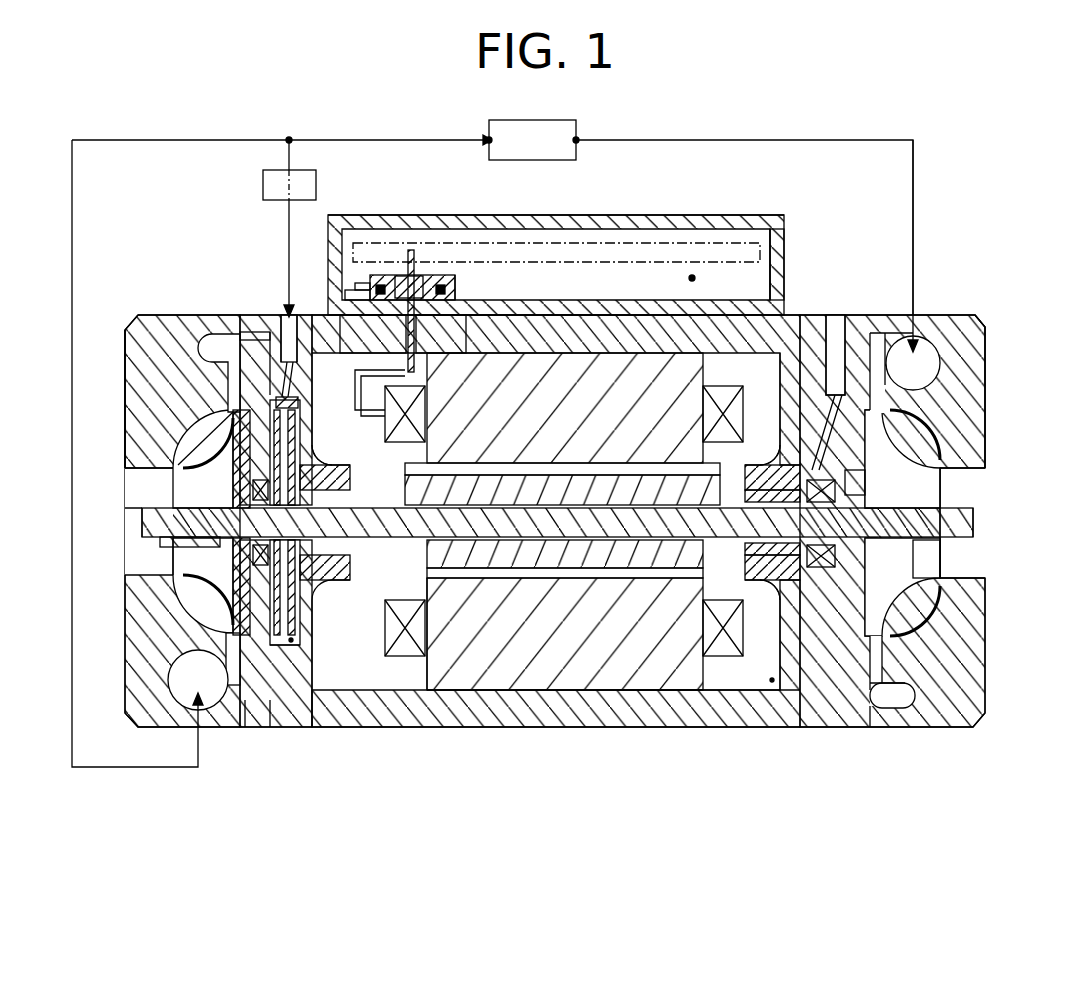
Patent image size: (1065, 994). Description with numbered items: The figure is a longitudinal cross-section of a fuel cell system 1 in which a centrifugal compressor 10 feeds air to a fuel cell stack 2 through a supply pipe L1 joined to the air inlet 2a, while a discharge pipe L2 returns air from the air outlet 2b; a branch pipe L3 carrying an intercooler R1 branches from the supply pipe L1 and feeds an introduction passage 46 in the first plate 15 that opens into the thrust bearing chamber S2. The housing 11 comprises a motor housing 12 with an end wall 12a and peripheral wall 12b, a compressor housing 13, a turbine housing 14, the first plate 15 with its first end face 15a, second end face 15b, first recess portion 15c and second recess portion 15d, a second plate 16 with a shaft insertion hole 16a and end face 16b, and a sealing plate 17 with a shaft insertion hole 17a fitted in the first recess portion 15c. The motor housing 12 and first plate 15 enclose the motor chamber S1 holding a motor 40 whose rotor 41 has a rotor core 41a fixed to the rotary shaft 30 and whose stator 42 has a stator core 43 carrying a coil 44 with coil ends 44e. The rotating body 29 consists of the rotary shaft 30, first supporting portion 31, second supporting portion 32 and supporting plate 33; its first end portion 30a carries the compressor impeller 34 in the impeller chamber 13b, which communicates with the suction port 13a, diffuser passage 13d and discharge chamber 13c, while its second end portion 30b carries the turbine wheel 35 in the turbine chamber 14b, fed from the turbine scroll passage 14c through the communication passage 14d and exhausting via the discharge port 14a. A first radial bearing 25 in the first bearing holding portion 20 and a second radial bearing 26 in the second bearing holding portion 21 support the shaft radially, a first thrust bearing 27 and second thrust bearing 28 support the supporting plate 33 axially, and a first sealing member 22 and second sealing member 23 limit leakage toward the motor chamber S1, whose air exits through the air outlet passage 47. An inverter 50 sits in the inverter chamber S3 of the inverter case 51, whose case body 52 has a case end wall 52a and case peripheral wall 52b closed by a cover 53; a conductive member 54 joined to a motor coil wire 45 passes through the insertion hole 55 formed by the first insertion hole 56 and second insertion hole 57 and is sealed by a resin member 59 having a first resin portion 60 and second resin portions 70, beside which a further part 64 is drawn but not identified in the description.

The fuel cell system 1 is at (941, 154).
The fuel cell stack 2 is at (533, 161).
The air inlet 2a is at (488, 144).
The air outlet 2b is at (577, 144).
The centrifugal compressor 10 is at (135, 253).
The housing 11 is at (188, 320).
The motor housing 12 is at (450, 727).
The end wall 12a is at (775, 610).
The peripheral wall 12b is at (672, 727).
The compressor housing 13 is at (153, 318).
The suction port 13a is at (130, 470).
The impeller chamber 13b is at (180, 488).
The discharge chamber 13c is at (196, 684).
The diffuser passage 13d is at (225, 650).
The turbine housing 14 is at (950, 320).
The discharge port 14a is at (985, 500).
The turbine chamber 14b is at (903, 486).
The turbine scroll passage 14c is at (915, 363).
The communication passage 14d is at (878, 660).
The first plate 15 is at (262, 318).
The first end face 15a is at (250, 727).
The second end face 15b is at (314, 727).
The first recess portion 15c is at (275, 727).
The second recess portion 15d is at (285, 648).
The second plate 16 is at (852, 320).
The shaft insertion hole 16a is at (850, 480).
The end face 16b is at (870, 727).
The sealing plate 17 is at (250, 330).
The shaft insertion hole 17a is at (173, 560).
The first bearing holding portion 20 is at (328, 460).
The second bearing holding portion 21 is at (775, 450).
The first sealing member 22 is at (236, 470).
The second sealing member 23 is at (870, 560).
The first radial bearing 25 is at (352, 570).
The second radial bearing 26 is at (745, 470).
The first thrust bearing 27 is at (266, 415).
The second thrust bearing 28 is at (299, 403).
The rotating body 29 is at (588, 545).
The rotary shaft 30 is at (622, 505).
The first end portion 30a is at (150, 522).
The second end portion 30b is at (973, 522).
The first supporting portion 31 is at (352, 480).
The second supporting portion 32 is at (800, 580).
The supporting plate 33 is at (280, 390).
The compressor impeller 34 is at (160, 542).
The turbine wheel 35 is at (920, 562).
The motor 40 is at (522, 692).
The rotor 41 is at (510, 478).
The rotor core 41a is at (555, 470).
The stator 42 is at (565, 690).
The stator core 43 is at (595, 690).
The coil 44 is at (410, 657).
The coil ends 44e is at (410, 445).
The motor coil wires 45 is at (290, 460).
The introduction passage 46 is at (298, 320).
The air outlet passage 47 is at (834, 320).
The inverter 50 is at (642, 240).
The inverter case 51 is at (778, 215).
The case body 52 is at (778, 252).
The case end wall 52a is at (580, 345).
The case peripheral wall 52b is at (778, 268).
The cover 53 is at (732, 215).
The conductive member 54 is at (412, 262).
The insertion hole 55 is at (415, 373).
The first insertion hole 56 is at (400, 330).
The second insertion hole 57 is at (422, 330).
The resin member 59 is at (456, 286).
The first resin portion 60 is at (440, 272).
The sensor base 64 is at (348, 292).
The second resin portions 70 is at (403, 282).
The supply pipe L1 is at (118, 767).
The discharge pipe L2 is at (665, 140).
The branch pipe L3 is at (291, 162).
The intercooler R1 is at (318, 186).
The motor chamber S1 is at (771, 683).
The thrust bearing chamber S2 is at (293, 640).
The inverter chamber S3 is at (693, 275).